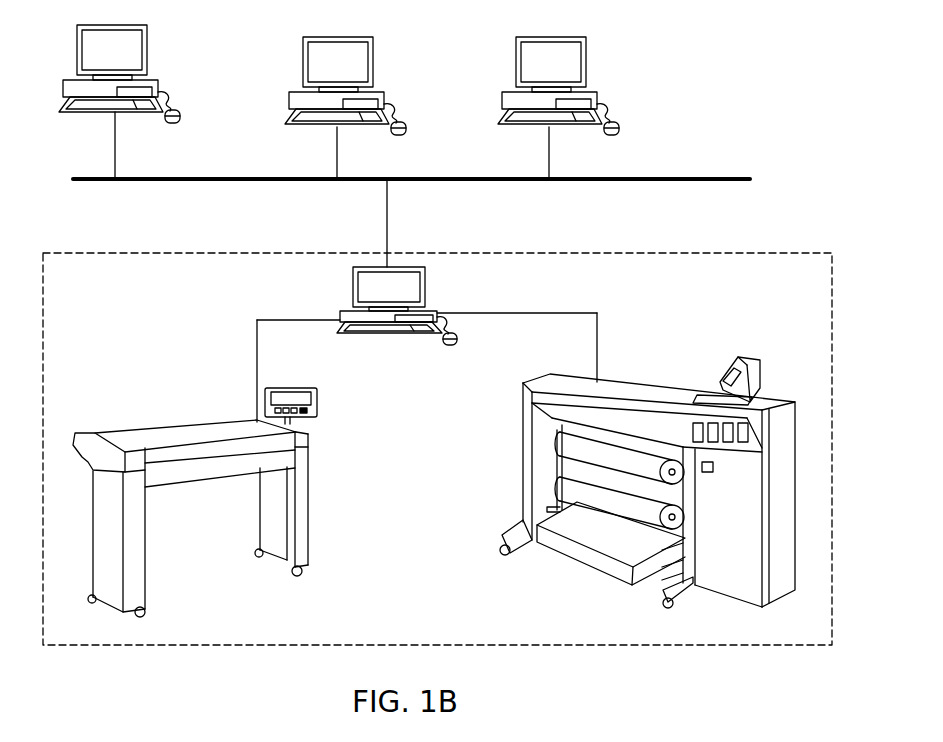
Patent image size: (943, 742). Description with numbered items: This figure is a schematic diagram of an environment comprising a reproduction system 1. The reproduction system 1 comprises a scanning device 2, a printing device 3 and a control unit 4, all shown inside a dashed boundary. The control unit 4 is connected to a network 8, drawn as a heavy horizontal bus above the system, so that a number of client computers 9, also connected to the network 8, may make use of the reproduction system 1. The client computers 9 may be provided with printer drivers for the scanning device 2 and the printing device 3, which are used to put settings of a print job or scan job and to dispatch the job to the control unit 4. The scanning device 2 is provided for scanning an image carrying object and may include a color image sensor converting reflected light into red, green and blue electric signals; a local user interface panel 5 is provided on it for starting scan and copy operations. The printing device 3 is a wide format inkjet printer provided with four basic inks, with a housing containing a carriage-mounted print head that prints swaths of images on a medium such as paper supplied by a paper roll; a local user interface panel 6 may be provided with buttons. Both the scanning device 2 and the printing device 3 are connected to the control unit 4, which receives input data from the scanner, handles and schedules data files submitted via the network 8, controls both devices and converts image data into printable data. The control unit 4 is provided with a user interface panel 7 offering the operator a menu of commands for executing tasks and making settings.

The reproduction system 1 is at (62, 252).
The scanning device 2 is at (168, 426).
The printing device 3 is at (654, 464).
The control unit 4 is at (427, 343).
The local user interface panel 5 is at (318, 406).
The local user interface panel 6 is at (738, 360).
The user interface panel 7 is at (353, 285).
The network 8 is at (750, 182).
The client computers 9 is at (157, 76).